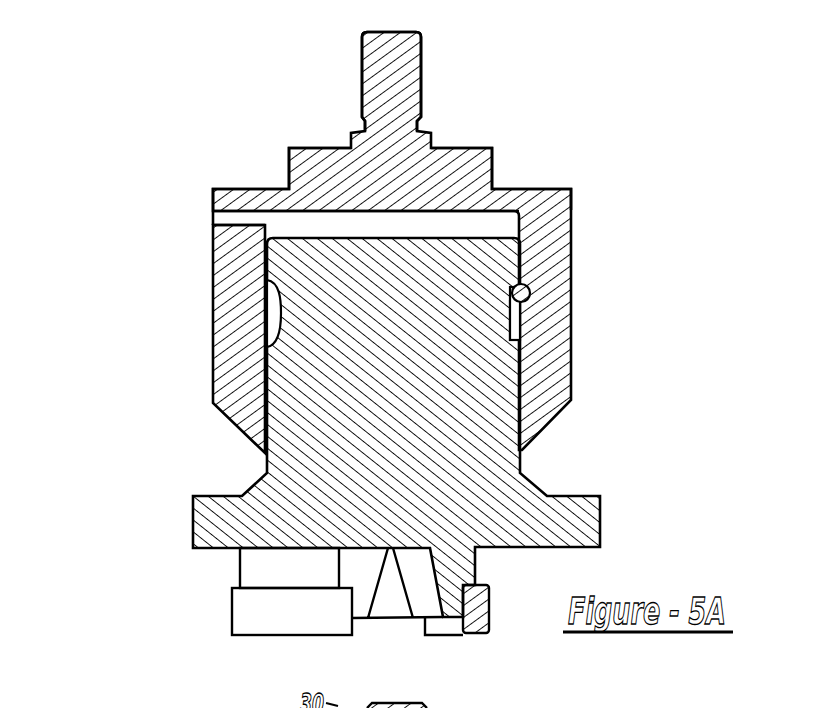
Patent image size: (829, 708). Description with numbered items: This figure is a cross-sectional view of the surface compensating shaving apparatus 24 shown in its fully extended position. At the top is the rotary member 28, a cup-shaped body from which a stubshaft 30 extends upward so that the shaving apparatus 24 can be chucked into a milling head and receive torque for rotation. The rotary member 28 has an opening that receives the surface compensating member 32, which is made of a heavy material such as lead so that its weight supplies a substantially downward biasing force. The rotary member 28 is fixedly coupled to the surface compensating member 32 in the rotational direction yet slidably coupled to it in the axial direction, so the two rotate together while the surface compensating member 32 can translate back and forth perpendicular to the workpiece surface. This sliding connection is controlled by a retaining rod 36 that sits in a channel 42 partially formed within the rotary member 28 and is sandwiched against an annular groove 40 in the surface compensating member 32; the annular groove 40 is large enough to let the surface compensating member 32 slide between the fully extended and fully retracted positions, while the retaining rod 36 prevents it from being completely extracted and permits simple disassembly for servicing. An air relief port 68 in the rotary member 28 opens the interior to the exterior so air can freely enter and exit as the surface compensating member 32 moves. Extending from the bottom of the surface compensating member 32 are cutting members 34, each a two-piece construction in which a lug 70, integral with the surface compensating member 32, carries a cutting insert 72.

The shaving apparatus 24 is at (113, 135).
The rotary member 28 is at (294, 138).
The stubshaft 30 is at (362, 78).
The air relief port 68 is at (227, 214).
The surface compensating member 32 is at (201, 486).
The annular groove 40 is at (270, 288).
The retaining rod 36 is at (527, 296).
The channel 42 is at (520, 288).
The cutting member 34 is at (226, 562).
The cutting insert 72 is at (312, 636).
The lug 70 is at (368, 618).